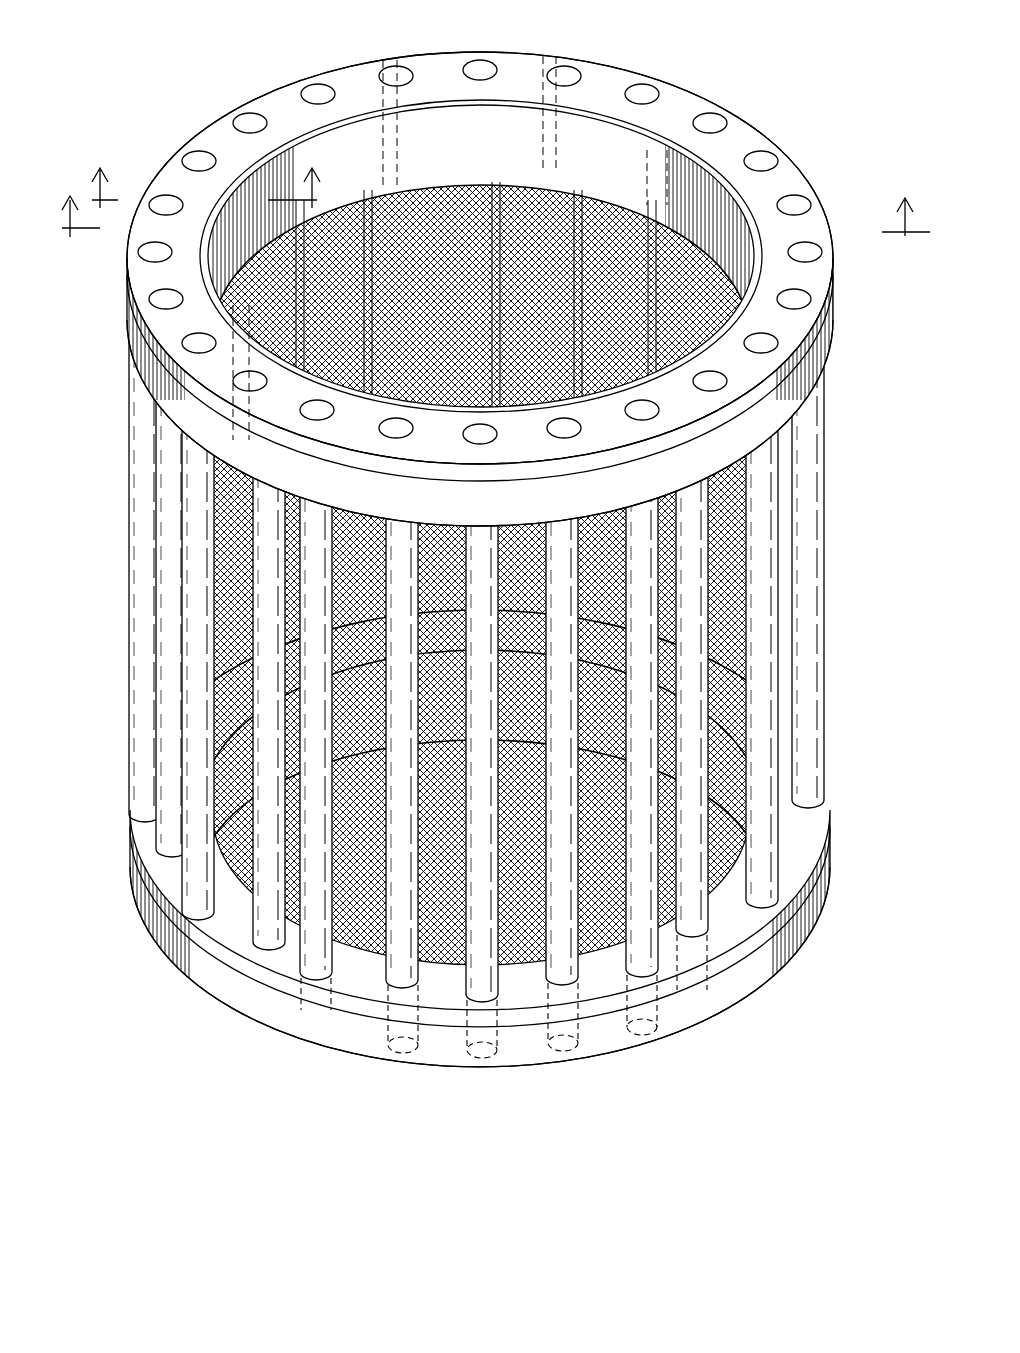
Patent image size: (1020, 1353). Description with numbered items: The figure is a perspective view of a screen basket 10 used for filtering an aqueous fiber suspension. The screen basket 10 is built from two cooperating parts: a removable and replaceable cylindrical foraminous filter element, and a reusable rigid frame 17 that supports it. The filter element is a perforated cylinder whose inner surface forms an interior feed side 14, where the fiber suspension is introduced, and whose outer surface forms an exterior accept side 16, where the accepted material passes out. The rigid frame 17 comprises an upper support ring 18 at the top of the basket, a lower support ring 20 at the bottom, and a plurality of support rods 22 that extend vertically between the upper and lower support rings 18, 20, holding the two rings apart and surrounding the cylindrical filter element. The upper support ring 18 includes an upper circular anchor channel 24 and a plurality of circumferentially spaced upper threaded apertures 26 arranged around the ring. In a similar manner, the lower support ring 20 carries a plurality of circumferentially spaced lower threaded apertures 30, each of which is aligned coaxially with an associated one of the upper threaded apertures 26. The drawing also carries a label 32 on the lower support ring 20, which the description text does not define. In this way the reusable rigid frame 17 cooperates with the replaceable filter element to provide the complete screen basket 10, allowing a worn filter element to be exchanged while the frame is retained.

The screen basket 10 is at (806, 108).
The interior feed side 14 is at (612, 166).
The exterior accept side 16 is at (783, 78).
The rigid frame 17 is at (632, 70).
The upper support ring 18 is at (365, 82).
The lower support ring 20 is at (302, 1030).
The support rods 22 is at (402, 250).
The upper circular anchor channel 24 is at (247, 158).
The upper threaded apertures 26 is at (398, 70).
The lower threaded apertures 30 is at (500, 1040).
The lower flange side wall 32 is at (397, 1000).